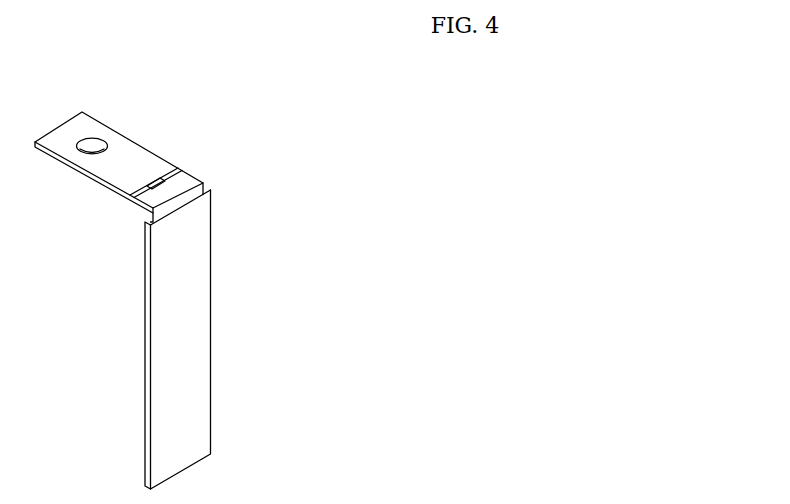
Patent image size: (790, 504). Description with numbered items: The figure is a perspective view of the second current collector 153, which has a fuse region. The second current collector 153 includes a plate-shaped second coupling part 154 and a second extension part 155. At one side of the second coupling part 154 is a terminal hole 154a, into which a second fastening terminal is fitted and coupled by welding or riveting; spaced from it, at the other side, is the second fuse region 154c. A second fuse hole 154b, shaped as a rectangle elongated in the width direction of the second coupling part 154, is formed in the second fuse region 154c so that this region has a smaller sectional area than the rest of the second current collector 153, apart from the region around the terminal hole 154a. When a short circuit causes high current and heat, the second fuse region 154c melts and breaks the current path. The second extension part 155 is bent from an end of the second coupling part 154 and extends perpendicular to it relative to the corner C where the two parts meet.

The second current collector 153 is at (226, 174).
The second coupling part 154 is at (125, 148).
The terminal hole 154a is at (92, 140).
The second fuse hole 154b is at (154, 178).
The second fuse region 154c is at (177, 170).
The second extension part 155 is at (200, 287).
The corner C is at (181, 196).